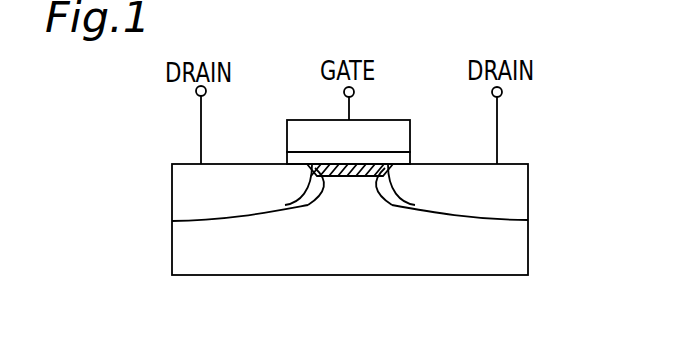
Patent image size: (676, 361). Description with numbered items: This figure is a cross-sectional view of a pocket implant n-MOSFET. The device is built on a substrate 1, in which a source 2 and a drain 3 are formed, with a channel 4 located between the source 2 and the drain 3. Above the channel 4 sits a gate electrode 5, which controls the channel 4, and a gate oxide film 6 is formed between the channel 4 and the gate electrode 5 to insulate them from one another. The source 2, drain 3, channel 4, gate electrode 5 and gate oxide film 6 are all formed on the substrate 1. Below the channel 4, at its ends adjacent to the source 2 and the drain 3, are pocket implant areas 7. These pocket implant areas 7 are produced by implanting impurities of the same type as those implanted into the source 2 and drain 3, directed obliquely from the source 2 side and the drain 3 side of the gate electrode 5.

The substrate 1 is at (528, 250).
The source 2 is at (175, 197).
The drain 3 is at (522, 188).
The channel 4 is at (348, 177).
The gate electrode 5 is at (295, 128).
The gate oxide film 6 is at (405, 157).
The pocket implant areas 7 is at (295, 205).